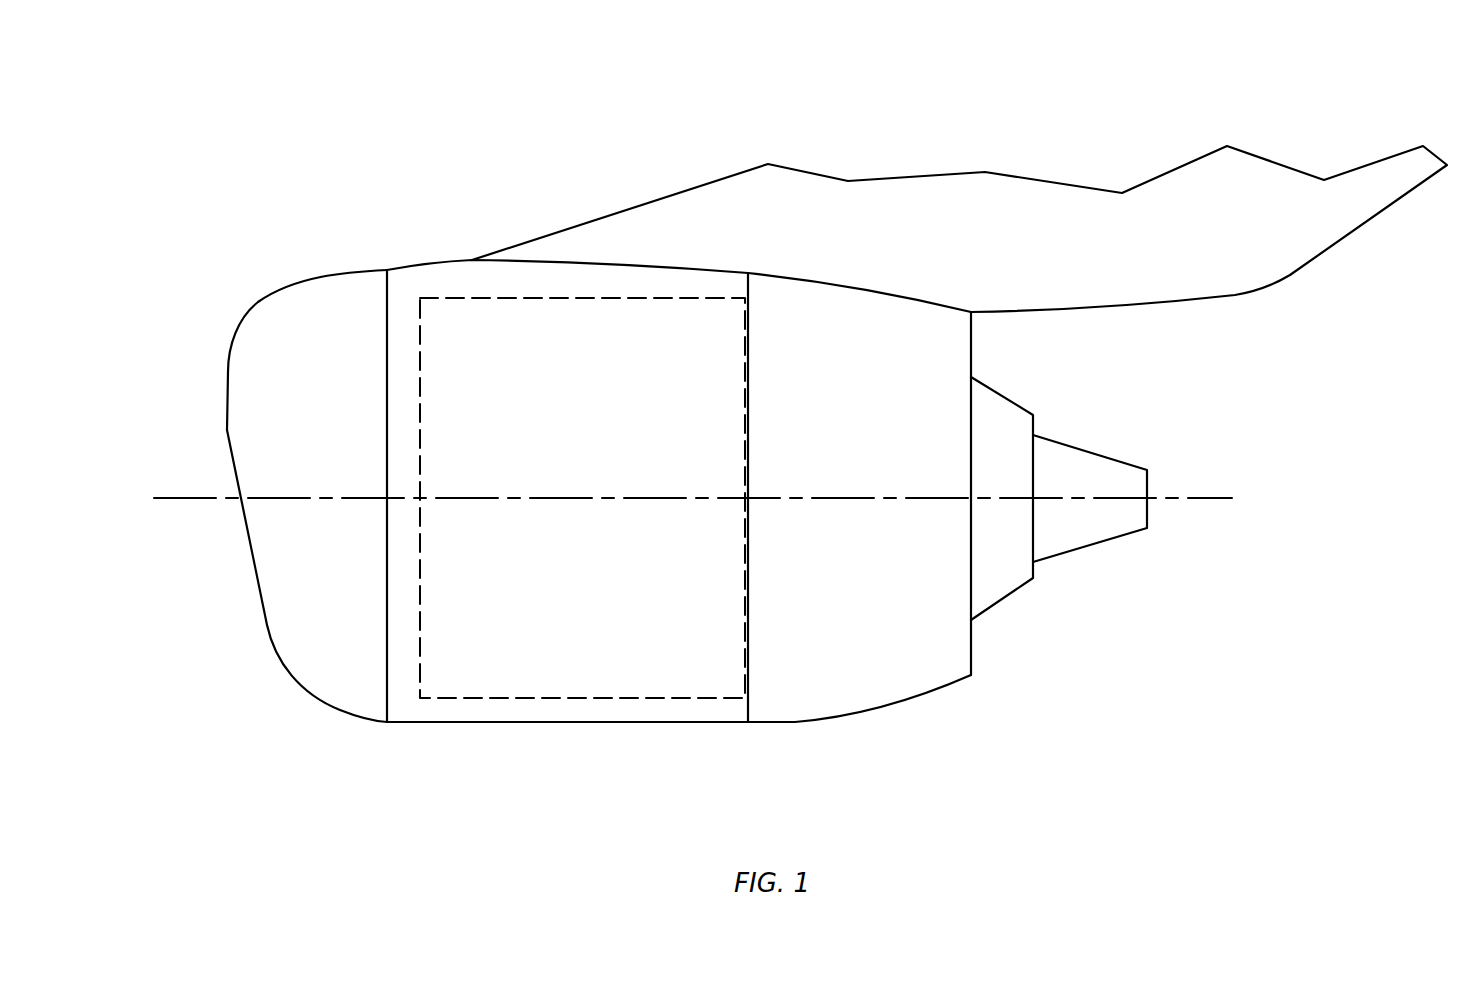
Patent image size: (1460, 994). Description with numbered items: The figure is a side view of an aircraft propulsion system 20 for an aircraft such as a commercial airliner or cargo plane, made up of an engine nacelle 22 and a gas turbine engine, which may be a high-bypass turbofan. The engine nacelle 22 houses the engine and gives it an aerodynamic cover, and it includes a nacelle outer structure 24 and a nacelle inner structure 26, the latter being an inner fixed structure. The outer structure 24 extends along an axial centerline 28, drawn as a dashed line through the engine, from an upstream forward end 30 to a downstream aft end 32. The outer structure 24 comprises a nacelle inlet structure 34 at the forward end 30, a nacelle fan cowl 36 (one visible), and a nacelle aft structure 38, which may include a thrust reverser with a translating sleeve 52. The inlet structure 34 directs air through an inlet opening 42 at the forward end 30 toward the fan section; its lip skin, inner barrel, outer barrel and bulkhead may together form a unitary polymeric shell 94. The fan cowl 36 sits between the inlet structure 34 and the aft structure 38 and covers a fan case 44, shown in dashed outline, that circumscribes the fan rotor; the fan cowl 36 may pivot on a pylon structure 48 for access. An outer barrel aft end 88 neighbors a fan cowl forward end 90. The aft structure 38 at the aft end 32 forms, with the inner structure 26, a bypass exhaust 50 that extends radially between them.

The aircraft propulsion system 20 is at (222, 128).
The engine nacelle 22 is at (313, 278).
The nacelle outer structure 24 is at (445, 260).
The nacelle inner structure 26 is at (1013, 600).
The axial centerline 28 is at (170, 500).
The forward end 30 is at (228, 370).
The aft end 32 is at (972, 342).
The nacelle inlet structure 34 is at (227, 427).
The nacelle fan cowl 36 is at (510, 732).
The nacelle aft structure 38 is at (868, 714).
The inlet opening 42 is at (253, 572).
The fan case 44 is at (583, 698).
The pylon structure 48 is at (618, 213).
The bypass exhaust 50 is at (978, 662).
The translating sleeve 52 is at (796, 723).
The outer barrel aft end 88 is at (387, 700).
The fan cowl forward end 90 is at (387, 685).
The shell 94 is at (288, 698).